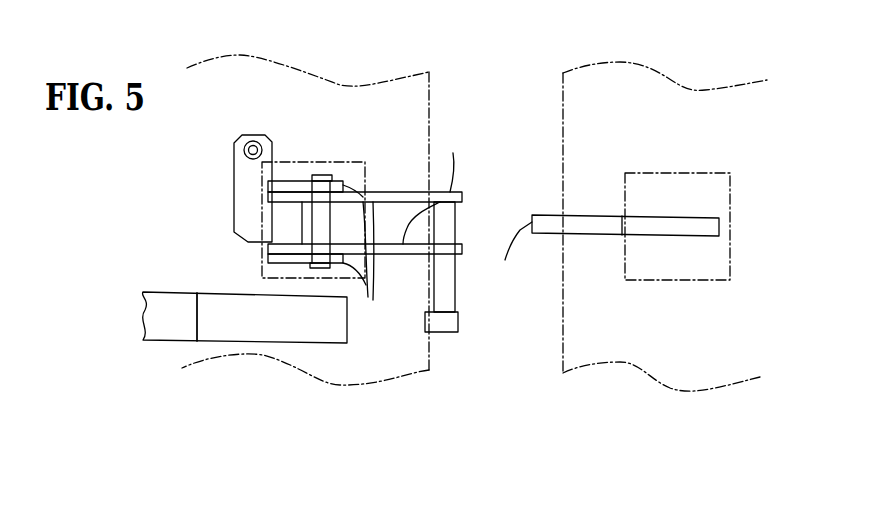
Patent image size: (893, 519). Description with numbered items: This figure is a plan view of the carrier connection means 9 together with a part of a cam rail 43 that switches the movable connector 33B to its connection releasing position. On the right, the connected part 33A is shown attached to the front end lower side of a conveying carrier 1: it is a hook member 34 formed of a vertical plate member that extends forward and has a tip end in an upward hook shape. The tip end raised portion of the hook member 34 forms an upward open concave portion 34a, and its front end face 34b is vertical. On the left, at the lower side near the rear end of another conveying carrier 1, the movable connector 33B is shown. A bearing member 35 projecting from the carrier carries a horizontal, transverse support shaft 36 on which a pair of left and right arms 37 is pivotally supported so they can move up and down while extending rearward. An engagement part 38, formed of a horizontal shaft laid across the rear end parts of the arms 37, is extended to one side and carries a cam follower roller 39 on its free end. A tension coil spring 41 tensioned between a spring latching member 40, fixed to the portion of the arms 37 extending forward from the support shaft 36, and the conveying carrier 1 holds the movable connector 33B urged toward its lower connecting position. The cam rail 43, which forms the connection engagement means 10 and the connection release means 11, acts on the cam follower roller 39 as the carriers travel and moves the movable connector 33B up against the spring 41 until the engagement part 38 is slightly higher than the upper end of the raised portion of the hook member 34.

The conveying carrier 1 is at (258, 56).
The carrier connection means 9 is at (499, 168).
The connected part 33A is at (606, 168).
The movable connector 33B is at (401, 186).
The connection engagement means 10 is at (186, 357).
The connection release means 11 is at (167, 342).
The hook member 34 is at (580, 235).
The upward open concave portion 34a is at (597, 228).
The front end face 34b is at (507, 256).
The bearing member 35 is at (369, 269).
The support shaft 36 is at (318, 212).
The arms 37 is at (415, 192).
The engagement part 38 is at (447, 222).
The cam follower roller 39 is at (447, 332).
The spring latching member 40 is at (248, 214).
The tension coil spring 41 is at (246, 154).
The cam rail 43 is at (248, 325).